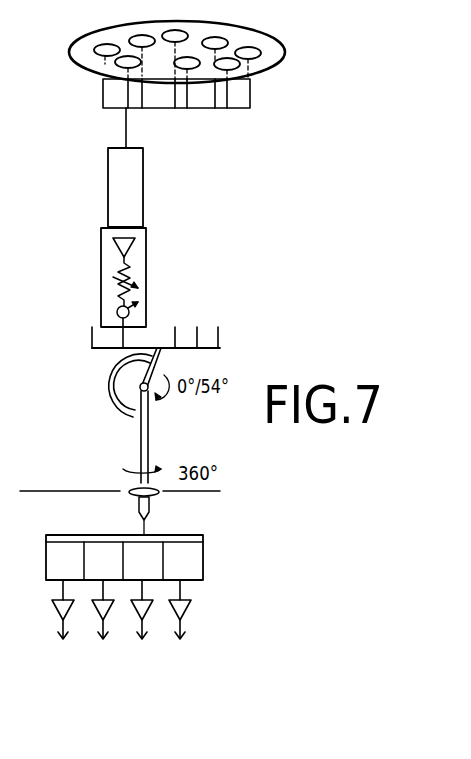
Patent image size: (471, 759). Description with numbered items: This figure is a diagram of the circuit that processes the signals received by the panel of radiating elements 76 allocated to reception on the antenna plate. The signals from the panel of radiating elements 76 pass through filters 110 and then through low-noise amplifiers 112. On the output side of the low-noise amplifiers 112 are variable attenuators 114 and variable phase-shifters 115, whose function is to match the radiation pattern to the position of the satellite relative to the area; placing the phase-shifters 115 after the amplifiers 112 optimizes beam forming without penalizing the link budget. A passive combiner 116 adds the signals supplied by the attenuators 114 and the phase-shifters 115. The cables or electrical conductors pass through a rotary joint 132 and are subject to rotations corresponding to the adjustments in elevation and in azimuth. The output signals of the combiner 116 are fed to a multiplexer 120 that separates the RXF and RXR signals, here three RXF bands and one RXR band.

The panel of radiating elements 76 is at (247, 38).
The filters 110 is at (130, 187).
The low-noise amplifiers 112 is at (113, 252).
The variable attenuators 114 is at (113, 288).
The variable phase-shifters 115 is at (133, 311).
The passive combiner 116 is at (95, 350).
The rotary joint 132 is at (120, 398).
The multiplexer 120 is at (203, 562).